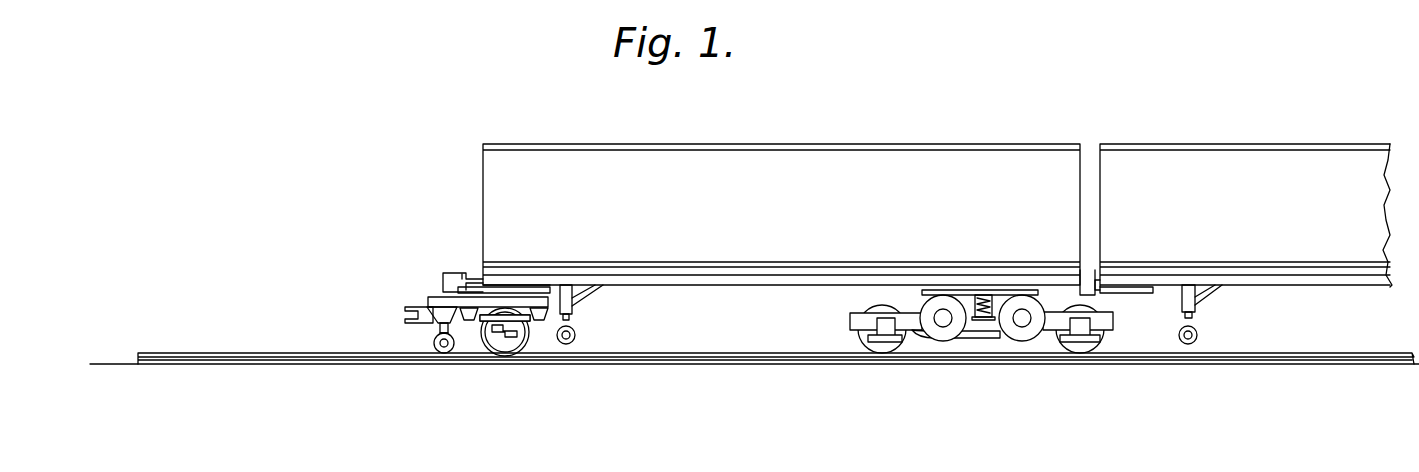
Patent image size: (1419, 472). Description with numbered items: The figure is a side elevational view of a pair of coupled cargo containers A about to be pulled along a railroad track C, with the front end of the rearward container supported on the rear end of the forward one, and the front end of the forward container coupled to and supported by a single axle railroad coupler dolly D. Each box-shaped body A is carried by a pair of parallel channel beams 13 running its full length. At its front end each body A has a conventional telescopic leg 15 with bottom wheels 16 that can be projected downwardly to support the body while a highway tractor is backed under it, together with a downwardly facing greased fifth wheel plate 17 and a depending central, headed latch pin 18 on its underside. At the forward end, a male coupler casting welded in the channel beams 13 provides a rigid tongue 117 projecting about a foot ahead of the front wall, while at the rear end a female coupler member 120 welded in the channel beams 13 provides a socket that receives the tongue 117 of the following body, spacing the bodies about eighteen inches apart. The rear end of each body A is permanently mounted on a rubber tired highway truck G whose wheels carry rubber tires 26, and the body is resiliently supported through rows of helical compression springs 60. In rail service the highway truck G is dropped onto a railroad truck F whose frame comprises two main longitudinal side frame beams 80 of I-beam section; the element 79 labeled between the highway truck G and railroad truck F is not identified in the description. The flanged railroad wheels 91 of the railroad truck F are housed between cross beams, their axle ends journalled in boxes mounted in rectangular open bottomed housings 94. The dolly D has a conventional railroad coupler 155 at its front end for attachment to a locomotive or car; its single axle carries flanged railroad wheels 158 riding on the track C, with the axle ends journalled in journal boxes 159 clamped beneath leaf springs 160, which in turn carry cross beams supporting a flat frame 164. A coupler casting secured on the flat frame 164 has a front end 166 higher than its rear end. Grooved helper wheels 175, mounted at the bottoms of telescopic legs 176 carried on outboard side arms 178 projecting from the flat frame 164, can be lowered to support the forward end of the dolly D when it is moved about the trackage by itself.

The cargo container A is at (637, 132).
The railroad track C is at (218, 350).
The single axle railroad dolly D is at (392, 263).
The railroad truck F is at (979, 309).
The highway truck G is at (1043, 303).
The channel beam 13 is at (735, 283).
The telescopic leg 15 is at (586, 306).
The bottom wheel 16 is at (578, 337).
The fifth wheel plate 17 is at (505, 288).
The latch pin 18 is at (1127, 296).
The rubber tire 26 is at (945, 342).
The helical compression spring 60 is at (981, 300).
The bolster 79 is at (1003, 288).
The main longitudinal side frame beam 80 is at (858, 318).
The flanged railroad wheel 91 is at (868, 342).
The housing 94 is at (887, 335).
The rigid tongue 117 is at (476, 273).
The female coupler member 120 is at (1086, 262).
The railroad coupler 155 is at (400, 315).
The flanged railroad wheel 158 is at (505, 350).
The journal box 159 is at (525, 345).
The leaf spring 160 is at (517, 298).
The flat frame 164 is at (427, 296).
The front end of coupler member 166 is at (443, 287).
The grooved helper wheel 175 is at (445, 352).
The telescopic leg 176 is at (433, 347).
The outboard side arm 178 is at (433, 325).